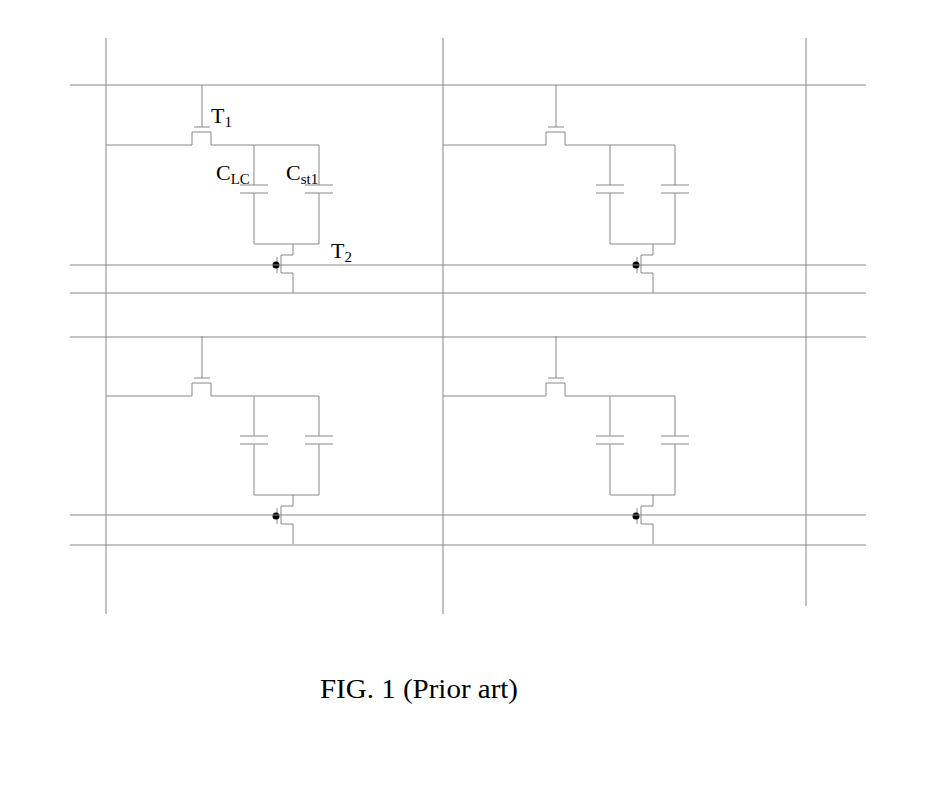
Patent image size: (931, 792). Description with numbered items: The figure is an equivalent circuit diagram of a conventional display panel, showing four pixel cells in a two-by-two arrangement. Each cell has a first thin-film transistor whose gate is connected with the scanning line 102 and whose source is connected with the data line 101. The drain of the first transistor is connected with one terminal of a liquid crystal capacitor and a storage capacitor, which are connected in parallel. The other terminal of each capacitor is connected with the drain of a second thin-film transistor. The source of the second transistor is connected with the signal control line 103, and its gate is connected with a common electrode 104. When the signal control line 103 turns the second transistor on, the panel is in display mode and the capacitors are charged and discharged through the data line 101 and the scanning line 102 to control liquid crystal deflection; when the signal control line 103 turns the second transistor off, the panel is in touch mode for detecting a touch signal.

The data line 101 is at (443, 315).
The scanning line 102 is at (449, 208).
The signal control line 103 is at (449, 388).
The common electrode 104 is at (442, 416).